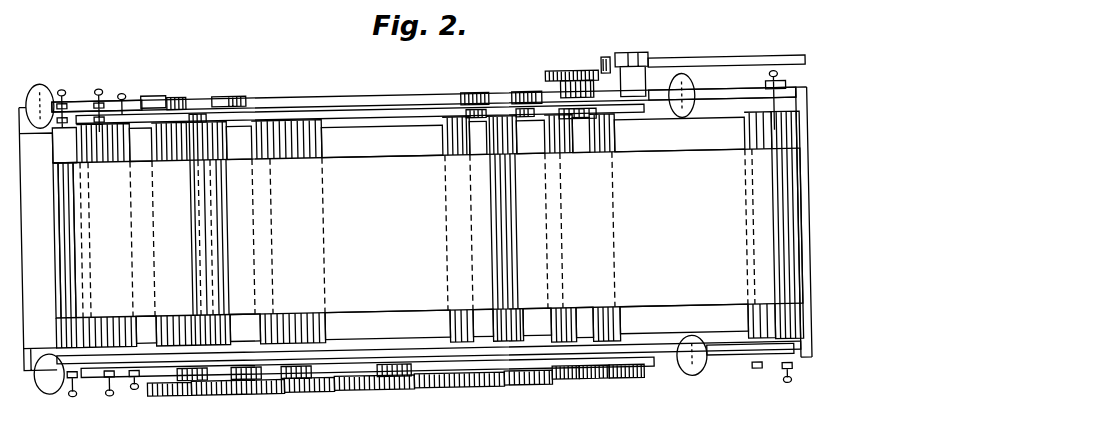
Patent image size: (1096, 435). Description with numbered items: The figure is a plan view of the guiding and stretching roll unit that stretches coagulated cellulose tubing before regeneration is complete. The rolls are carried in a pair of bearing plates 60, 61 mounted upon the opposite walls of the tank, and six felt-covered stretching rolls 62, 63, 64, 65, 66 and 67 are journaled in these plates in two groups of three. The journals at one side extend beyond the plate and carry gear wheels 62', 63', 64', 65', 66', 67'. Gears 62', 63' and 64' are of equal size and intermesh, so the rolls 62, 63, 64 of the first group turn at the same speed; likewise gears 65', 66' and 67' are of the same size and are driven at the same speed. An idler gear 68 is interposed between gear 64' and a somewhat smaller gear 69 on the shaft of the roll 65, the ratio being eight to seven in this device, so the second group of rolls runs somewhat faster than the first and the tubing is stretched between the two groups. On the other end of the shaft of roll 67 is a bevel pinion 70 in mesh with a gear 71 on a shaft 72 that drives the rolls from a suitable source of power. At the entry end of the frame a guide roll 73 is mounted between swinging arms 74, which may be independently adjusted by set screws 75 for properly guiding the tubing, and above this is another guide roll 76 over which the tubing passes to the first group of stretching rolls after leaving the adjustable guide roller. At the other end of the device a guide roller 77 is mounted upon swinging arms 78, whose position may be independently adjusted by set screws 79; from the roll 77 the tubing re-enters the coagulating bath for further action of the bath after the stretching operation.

The bearing plate 60 is at (367, 108).
The bearing plate 61 is at (366, 372).
The stretching roll 62 is at (168, 115).
The stretching roll 63 is at (238, 114).
The stretching roll 64 is at (286, 114).
The stretching roll 65 is at (454, 113).
The stretching roll 66 is at (501, 112).
The stretching roll 67 is at (617, 132).
The gear wheel 62' is at (170, 402).
The gear wheel 63' is at (238, 401).
The gear wheel 64' is at (309, 397).
The gear wheel 65' is at (550, 389).
The gear wheel 66' is at (585, 387).
The gear wheel 67' is at (625, 385).
The idler gear 68 is at (402, 393).
The gear 69 is at (500, 394).
The bevel pinion 70 is at (566, 82).
The gear 71 is at (606, 68).
The shaft 72 is at (712, 72).
The guide roll 73 is at (60, 147).
The swinging arm 74 is at (77, 105).
The set screw 75 is at (41, 84).
The guide roll 76 is at (73, 158).
The guide roller 77 is at (775, 142).
The swinging arm 78 is at (720, 106).
The set screw 79 is at (682, 130).